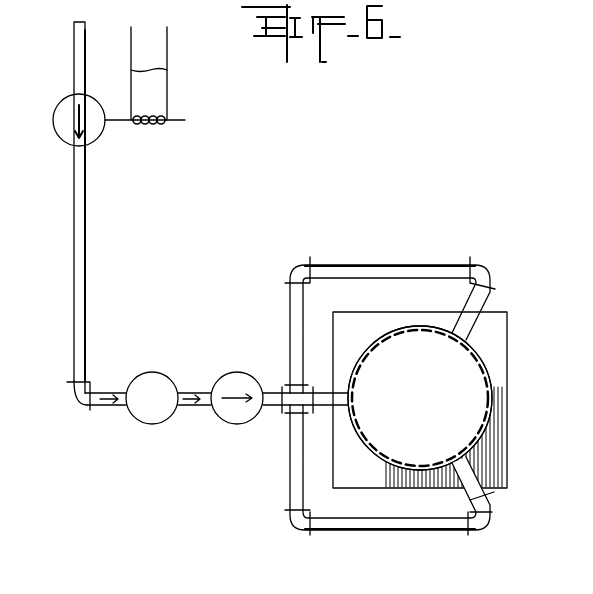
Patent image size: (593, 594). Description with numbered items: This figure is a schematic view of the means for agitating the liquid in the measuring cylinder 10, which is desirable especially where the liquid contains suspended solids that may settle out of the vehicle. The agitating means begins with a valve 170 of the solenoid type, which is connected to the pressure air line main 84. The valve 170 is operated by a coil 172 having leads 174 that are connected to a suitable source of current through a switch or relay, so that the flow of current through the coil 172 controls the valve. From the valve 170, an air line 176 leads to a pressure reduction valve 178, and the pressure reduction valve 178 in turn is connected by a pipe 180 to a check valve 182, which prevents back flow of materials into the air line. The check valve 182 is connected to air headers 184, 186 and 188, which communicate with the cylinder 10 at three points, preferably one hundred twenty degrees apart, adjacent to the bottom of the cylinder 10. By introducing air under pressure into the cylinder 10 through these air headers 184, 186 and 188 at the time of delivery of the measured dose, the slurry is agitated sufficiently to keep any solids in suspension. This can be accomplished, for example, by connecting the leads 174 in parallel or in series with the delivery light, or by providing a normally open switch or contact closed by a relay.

The cylinder 10 is at (492, 378).
The pressure air line main 84 is at (73, 56).
The valve 170 is at (98, 140).
The coil 172 is at (158, 113).
The leads 174 is at (168, 70).
The air line 176 is at (86, 214).
The pressure reduction valve 178 is at (150, 340).
The pipe 180 is at (198, 405).
The check valve 182 is at (237, 372).
The air header 184 is at (398, 265).
The air header 186 is at (323, 393).
The air header 188 is at (290, 478).